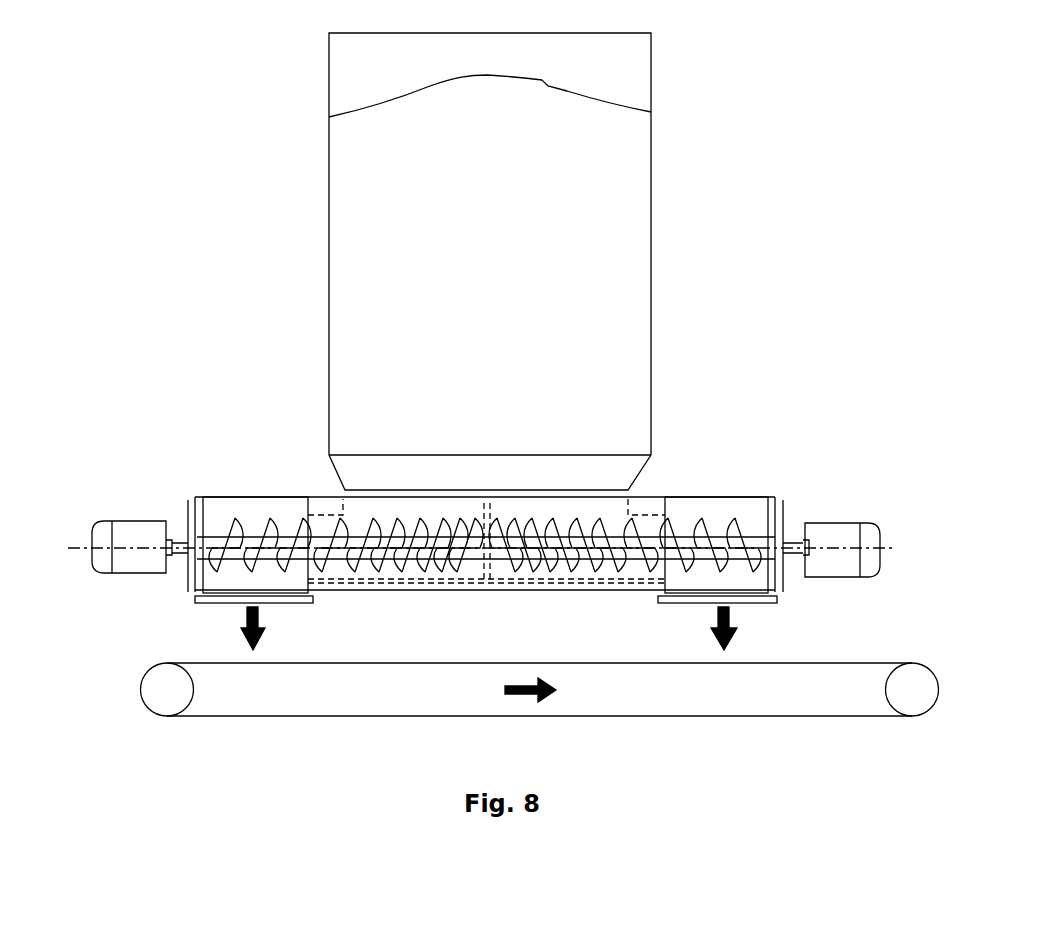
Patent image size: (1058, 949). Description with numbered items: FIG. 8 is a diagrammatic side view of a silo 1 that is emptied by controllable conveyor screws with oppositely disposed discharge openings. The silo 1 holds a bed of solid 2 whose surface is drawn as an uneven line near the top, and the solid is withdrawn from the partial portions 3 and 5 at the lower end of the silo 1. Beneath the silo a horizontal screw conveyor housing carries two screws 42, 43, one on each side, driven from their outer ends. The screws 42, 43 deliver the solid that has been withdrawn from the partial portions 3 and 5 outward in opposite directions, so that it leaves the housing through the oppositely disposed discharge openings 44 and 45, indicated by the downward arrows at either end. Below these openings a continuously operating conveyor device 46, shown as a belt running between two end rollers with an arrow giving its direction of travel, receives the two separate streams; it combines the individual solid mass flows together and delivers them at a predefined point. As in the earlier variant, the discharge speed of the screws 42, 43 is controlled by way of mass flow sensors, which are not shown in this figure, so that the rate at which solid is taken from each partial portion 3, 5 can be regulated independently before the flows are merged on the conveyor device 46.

The container / hopper 1 is at (651, 66).
The bulk material 2 is at (407, 103).
The partial portion 3 is at (615, 502).
The partial portion 5 is at (362, 477).
The screw 42 is at (668, 527).
The screw 43 is at (270, 520).
The discharge opening 44 is at (755, 603).
The discharge opening 45 is at (284, 603).
The conveyor device 46 is at (755, 716).